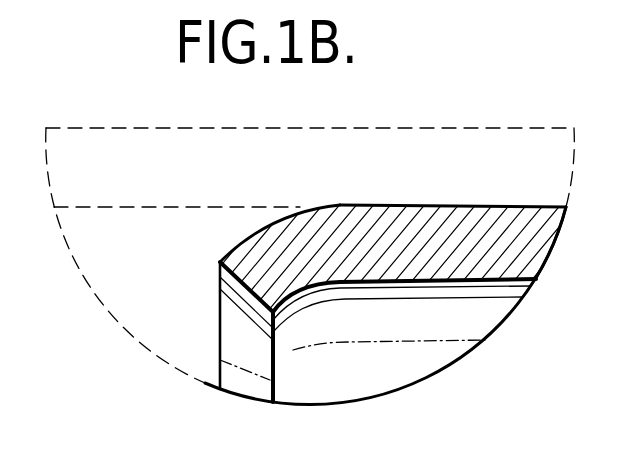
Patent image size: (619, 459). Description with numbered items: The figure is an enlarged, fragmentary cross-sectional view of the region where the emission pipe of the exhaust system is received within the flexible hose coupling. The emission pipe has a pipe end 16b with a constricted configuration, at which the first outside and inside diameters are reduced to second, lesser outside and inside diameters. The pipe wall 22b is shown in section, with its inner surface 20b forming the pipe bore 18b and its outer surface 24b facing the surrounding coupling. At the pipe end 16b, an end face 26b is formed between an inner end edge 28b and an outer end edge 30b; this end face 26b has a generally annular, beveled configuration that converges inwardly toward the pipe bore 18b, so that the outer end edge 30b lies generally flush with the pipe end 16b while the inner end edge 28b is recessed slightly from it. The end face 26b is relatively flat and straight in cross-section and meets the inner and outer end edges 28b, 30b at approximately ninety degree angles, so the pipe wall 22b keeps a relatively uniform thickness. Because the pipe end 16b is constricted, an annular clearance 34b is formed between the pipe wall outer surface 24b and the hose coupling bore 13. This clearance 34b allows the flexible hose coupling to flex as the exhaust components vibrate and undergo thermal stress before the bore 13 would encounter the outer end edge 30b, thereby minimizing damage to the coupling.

The hose coupling bore 13 is at (181, 208).
The pipe wall outer surface 24b is at (493, 205).
The annular clearance 34b is at (243, 238).
The outer end edge 30b is at (220, 262).
The end face 26b is at (220, 301).
The inner end edge 28b is at (263, 310).
The pipe bore 18b is at (443, 283).
The inner surface 20b is at (347, 283).
The pipe end 16b is at (273, 318).
The pipe wall 22b is at (555, 253).